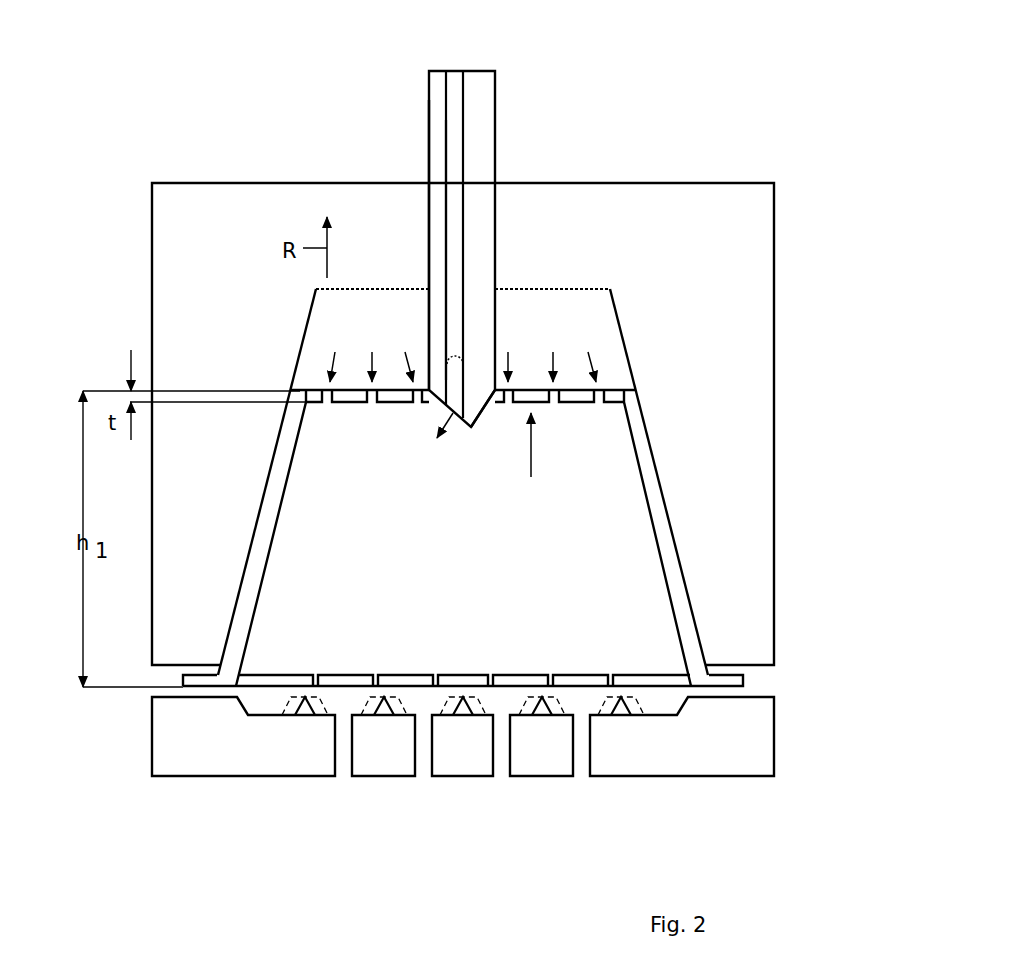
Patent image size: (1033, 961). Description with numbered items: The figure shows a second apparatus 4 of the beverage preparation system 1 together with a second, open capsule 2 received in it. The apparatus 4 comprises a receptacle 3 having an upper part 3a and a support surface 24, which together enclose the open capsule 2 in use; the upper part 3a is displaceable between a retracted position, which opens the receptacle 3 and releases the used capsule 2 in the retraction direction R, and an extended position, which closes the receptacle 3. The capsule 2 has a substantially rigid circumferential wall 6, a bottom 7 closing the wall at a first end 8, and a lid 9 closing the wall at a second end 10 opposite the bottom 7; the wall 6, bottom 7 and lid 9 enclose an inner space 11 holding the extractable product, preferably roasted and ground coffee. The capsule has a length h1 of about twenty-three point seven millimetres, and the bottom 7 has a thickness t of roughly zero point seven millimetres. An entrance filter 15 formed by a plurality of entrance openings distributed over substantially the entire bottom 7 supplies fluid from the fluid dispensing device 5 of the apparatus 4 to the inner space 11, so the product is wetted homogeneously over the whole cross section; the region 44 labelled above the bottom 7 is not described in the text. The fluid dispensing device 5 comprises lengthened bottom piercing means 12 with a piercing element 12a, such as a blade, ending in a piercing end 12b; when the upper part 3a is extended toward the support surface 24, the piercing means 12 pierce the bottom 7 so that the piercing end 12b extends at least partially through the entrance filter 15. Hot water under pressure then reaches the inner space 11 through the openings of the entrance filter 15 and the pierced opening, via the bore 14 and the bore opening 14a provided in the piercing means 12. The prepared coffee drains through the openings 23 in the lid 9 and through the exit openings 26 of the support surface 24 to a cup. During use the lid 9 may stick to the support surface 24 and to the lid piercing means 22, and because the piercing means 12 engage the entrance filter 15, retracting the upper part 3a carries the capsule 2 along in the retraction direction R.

The system 1 is at (773, 78).
The open capsule 2 is at (658, 503).
The receptacle 3 is at (778, 268).
The upper part 3a is at (742, 233).
The second apparatus 4 is at (775, 385).
The fluid dispensing device 5 is at (497, 78).
The circumferential wall 6 is at (660, 550).
The bottom 7 is at (522, 397).
The first end 8 is at (624, 407).
The lid 9 is at (580, 680).
The second end 10 is at (688, 665).
The inner space 11 is at (478, 549).
The lengthened bottom piercing means 12 is at (496, 168).
The piercing element 12a is at (480, 229).
The piercing end 12b is at (479, 390).
The bore 14 is at (455, 70).
The bore opening 14a is at (453, 358).
The entrance filter 15 is at (508, 390).
The lid piercing means 22 is at (305, 705).
The openings 23 is at (552, 673).
The support surface 24 is at (742, 737).
The exit openings 26 is at (344, 745).
The top wall surface 44 is at (402, 341).